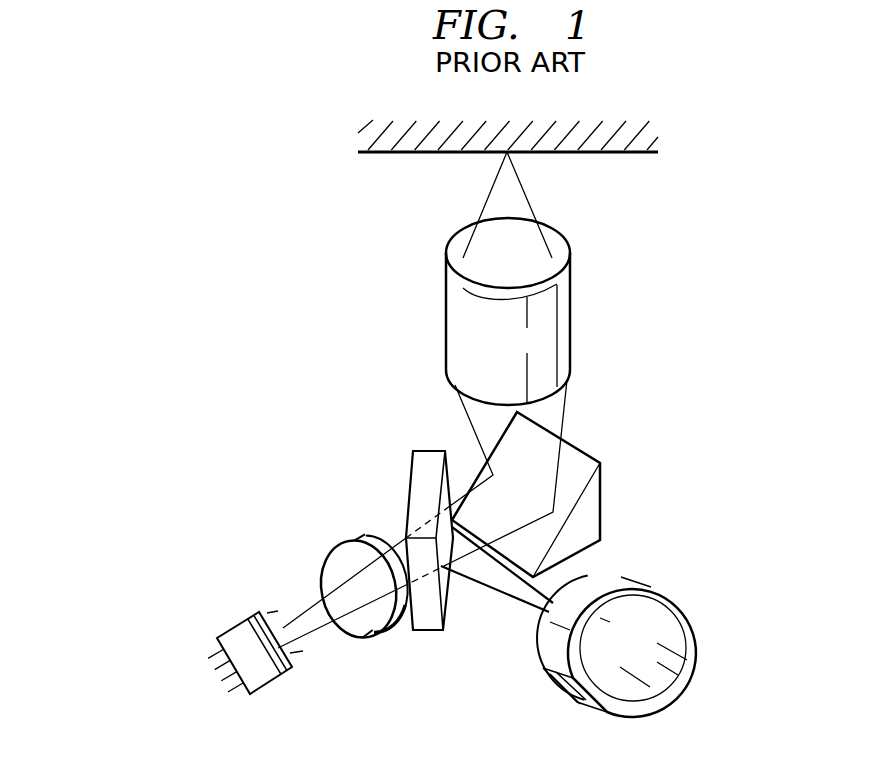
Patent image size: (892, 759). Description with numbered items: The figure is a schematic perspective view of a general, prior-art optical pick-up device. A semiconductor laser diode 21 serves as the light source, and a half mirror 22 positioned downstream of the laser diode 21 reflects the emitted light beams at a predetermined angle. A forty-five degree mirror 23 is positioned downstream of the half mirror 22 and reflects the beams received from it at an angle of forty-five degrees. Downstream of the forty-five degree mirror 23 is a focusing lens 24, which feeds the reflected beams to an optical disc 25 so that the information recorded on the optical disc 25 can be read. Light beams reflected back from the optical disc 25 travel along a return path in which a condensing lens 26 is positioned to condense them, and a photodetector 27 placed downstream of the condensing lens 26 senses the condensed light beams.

The semiconductor laser diode 21 is at (673, 618).
The half mirror 22 is at (412, 500).
The 45° mirror 23 is at (592, 502).
The focusing lens 24 is at (542, 328).
The optical disc 25 is at (395, 133).
The condensing lens 26 is at (332, 568).
The photodetector 27 is at (237, 637).